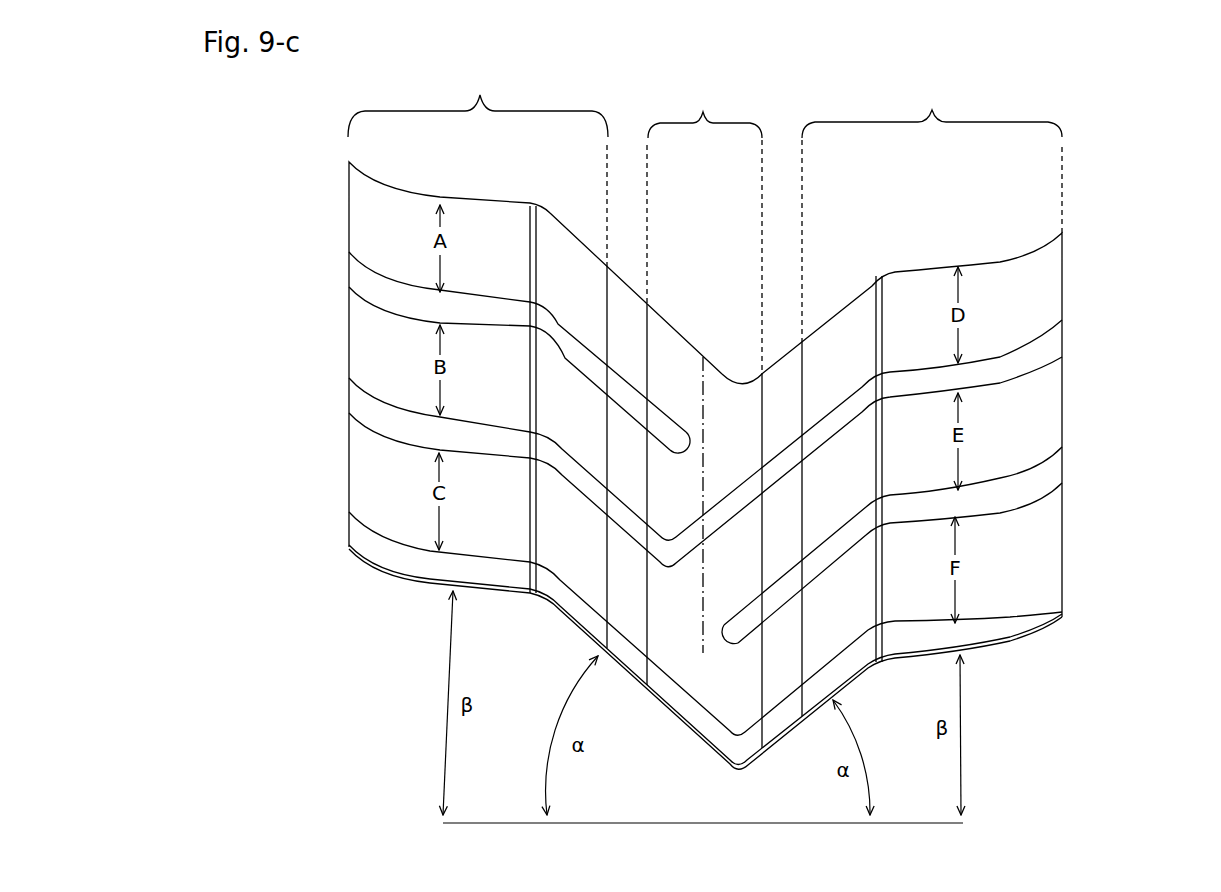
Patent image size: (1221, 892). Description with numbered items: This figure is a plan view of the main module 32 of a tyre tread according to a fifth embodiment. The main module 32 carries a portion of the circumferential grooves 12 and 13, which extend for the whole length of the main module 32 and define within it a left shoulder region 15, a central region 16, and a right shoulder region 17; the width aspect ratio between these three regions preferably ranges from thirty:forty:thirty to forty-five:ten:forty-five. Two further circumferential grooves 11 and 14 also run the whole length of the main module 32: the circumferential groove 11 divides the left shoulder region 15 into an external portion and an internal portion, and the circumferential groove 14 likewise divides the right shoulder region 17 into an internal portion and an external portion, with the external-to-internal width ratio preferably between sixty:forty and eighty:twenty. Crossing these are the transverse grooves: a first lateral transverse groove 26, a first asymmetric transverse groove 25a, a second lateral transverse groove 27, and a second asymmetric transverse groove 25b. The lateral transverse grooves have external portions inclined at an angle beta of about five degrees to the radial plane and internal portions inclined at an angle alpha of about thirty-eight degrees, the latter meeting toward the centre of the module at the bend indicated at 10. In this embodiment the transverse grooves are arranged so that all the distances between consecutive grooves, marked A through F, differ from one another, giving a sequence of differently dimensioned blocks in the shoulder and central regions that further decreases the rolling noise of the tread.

The central bend 10 is at (730, 489).
The circumferential groove 11 is at (537, 387).
The circumferential groove 12 is at (627, 415).
The circumferential groove 13 is at (782, 444).
The circumferential groove 14 is at (880, 454).
The left shoulder region 15 is at (478, 103).
The central region 16 is at (705, 104).
The right shoulder region 17 is at (932, 157).
The first asymmetric transverse groove 25a is at (360, 407).
The second asymmetric transverse groove 25b is at (1047, 619).
The first lateral transverse groove 26 is at (360, 272).
The second lateral transverse groove 27 is at (1045, 486).
The main module 32 is at (1075, 220).